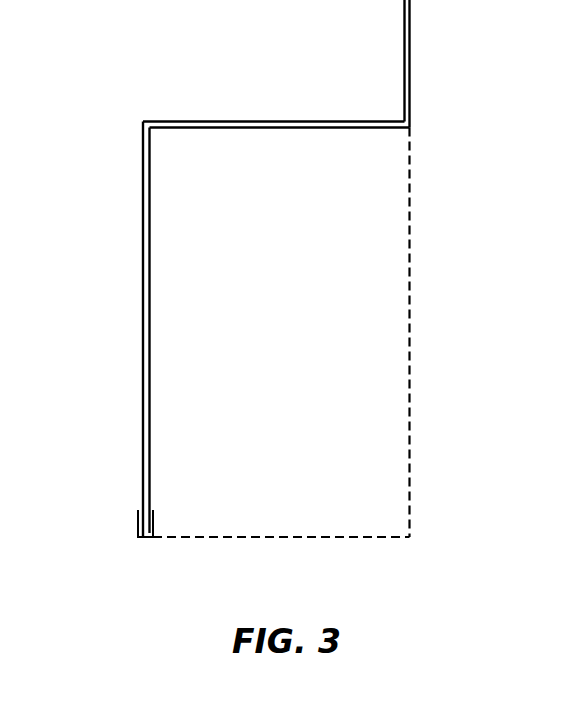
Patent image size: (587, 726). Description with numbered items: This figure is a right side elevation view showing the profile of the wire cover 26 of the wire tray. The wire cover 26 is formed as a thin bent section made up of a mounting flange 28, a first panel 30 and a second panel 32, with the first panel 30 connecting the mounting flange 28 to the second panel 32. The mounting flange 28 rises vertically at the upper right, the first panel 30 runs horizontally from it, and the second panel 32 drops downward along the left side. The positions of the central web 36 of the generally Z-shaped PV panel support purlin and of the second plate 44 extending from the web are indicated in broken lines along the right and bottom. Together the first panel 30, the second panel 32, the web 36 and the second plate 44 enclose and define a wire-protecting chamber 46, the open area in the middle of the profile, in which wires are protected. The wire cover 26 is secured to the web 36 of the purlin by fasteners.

The wire cover 26 is at (273, 268).
The mounting flange 28 is at (410, 51).
The first panel 30 is at (270, 119).
The second panel 32 is at (151, 270).
The central web 36 is at (411, 323).
The second plate 44 is at (240, 540).
The wire-protecting chamber 46 is at (297, 330).